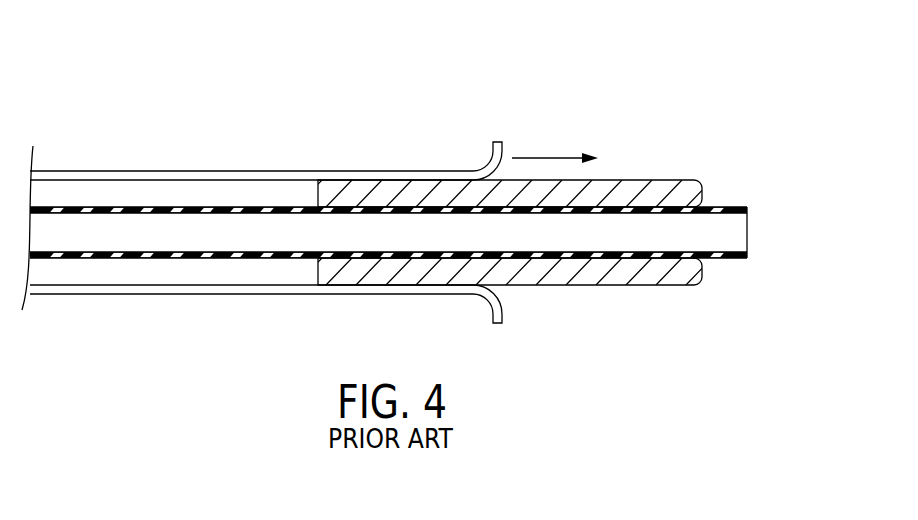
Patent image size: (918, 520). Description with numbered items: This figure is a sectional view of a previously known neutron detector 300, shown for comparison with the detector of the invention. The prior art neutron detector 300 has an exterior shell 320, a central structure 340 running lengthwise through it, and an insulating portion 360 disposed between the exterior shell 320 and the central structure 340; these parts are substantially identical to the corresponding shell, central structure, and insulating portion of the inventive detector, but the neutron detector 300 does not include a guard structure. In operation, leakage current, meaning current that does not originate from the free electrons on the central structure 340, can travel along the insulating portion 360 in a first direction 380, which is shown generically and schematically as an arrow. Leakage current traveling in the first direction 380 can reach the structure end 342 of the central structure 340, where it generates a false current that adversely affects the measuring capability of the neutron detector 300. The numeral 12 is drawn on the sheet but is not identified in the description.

The neutron detector 300 is at (171, 64).
The catheter 12 is at (758, 175).
The exterior shell 320 is at (56, 171).
The central structure 340 is at (36, 258).
The structure end 342 is at (748, 256).
The insulating portion 360 is at (383, 190).
The first direction 380 is at (552, 155).